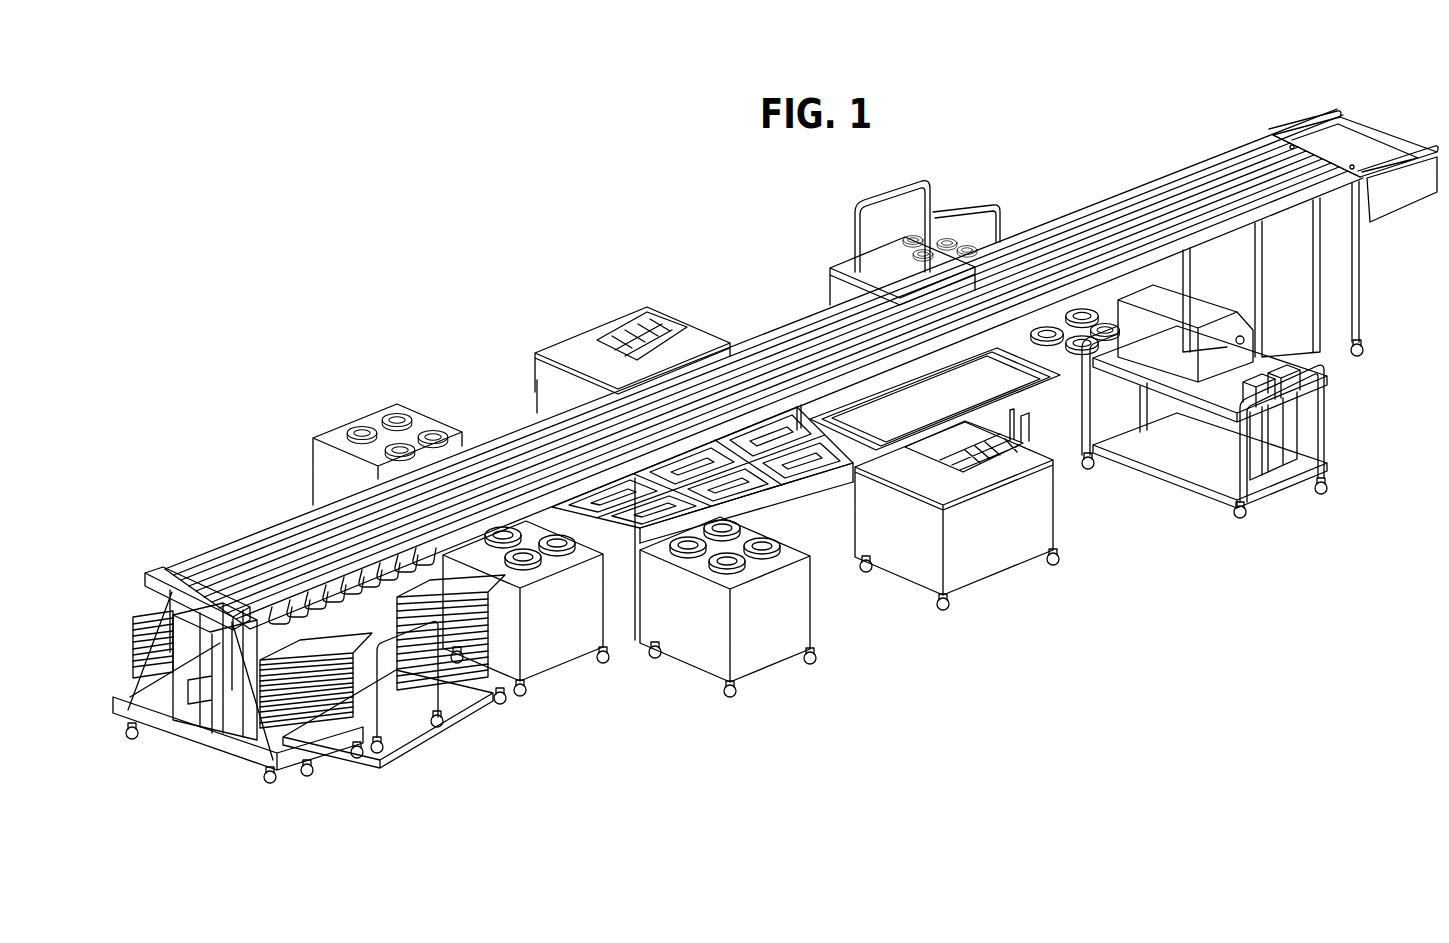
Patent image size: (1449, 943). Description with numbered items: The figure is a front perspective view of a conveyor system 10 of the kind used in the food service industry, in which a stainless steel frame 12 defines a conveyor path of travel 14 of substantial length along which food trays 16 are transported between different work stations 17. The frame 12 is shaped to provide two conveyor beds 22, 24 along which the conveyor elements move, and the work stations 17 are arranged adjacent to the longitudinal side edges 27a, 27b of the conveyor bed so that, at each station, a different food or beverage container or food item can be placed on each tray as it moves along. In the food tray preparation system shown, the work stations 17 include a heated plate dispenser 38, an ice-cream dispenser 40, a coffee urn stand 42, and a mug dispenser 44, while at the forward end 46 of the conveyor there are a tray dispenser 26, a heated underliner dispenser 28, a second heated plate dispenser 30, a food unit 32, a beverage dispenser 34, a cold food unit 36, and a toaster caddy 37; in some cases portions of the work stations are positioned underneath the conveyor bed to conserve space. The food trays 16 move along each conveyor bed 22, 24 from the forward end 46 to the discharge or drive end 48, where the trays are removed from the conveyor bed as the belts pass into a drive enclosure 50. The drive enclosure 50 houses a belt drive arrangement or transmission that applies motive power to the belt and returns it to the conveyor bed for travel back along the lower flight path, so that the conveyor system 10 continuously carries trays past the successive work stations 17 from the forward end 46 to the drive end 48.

The conveyor system 10 is at (728, 304).
The frame 12 is at (1212, 160).
The conveyor path of travel 14 is at (288, 556).
The food trays 16 is at (545, 428).
The work stations 17 is at (686, 695).
The conveyor bed 22 is at (292, 545).
The conveyor bed 24 is at (262, 562).
The tray dispenser 26 is at (363, 727).
The longitudinal side edge 27a is at (309, 513).
The longitudinal side edge 27b is at (611, 483).
The heated underliner dispenser 28 is at (567, 653).
The second heated plate dispenser 30 is at (767, 657).
The food unit 32 is at (813, 530).
The beverage dispenser 34 is at (1007, 567).
The cold food unit 36 is at (1060, 462).
The toaster caddy 37 is at (1324, 372).
The heated plate dispenser 38 is at (343, 434).
The ice-cream dispenser 40 is at (567, 347).
The coffee urn stand 42 is at (846, 270).
The mug dispenser 44 is at (930, 230).
The forward end 46 is at (142, 580).
The drive end 48 is at (1283, 135).
The drive enclosure 50 is at (1358, 292).